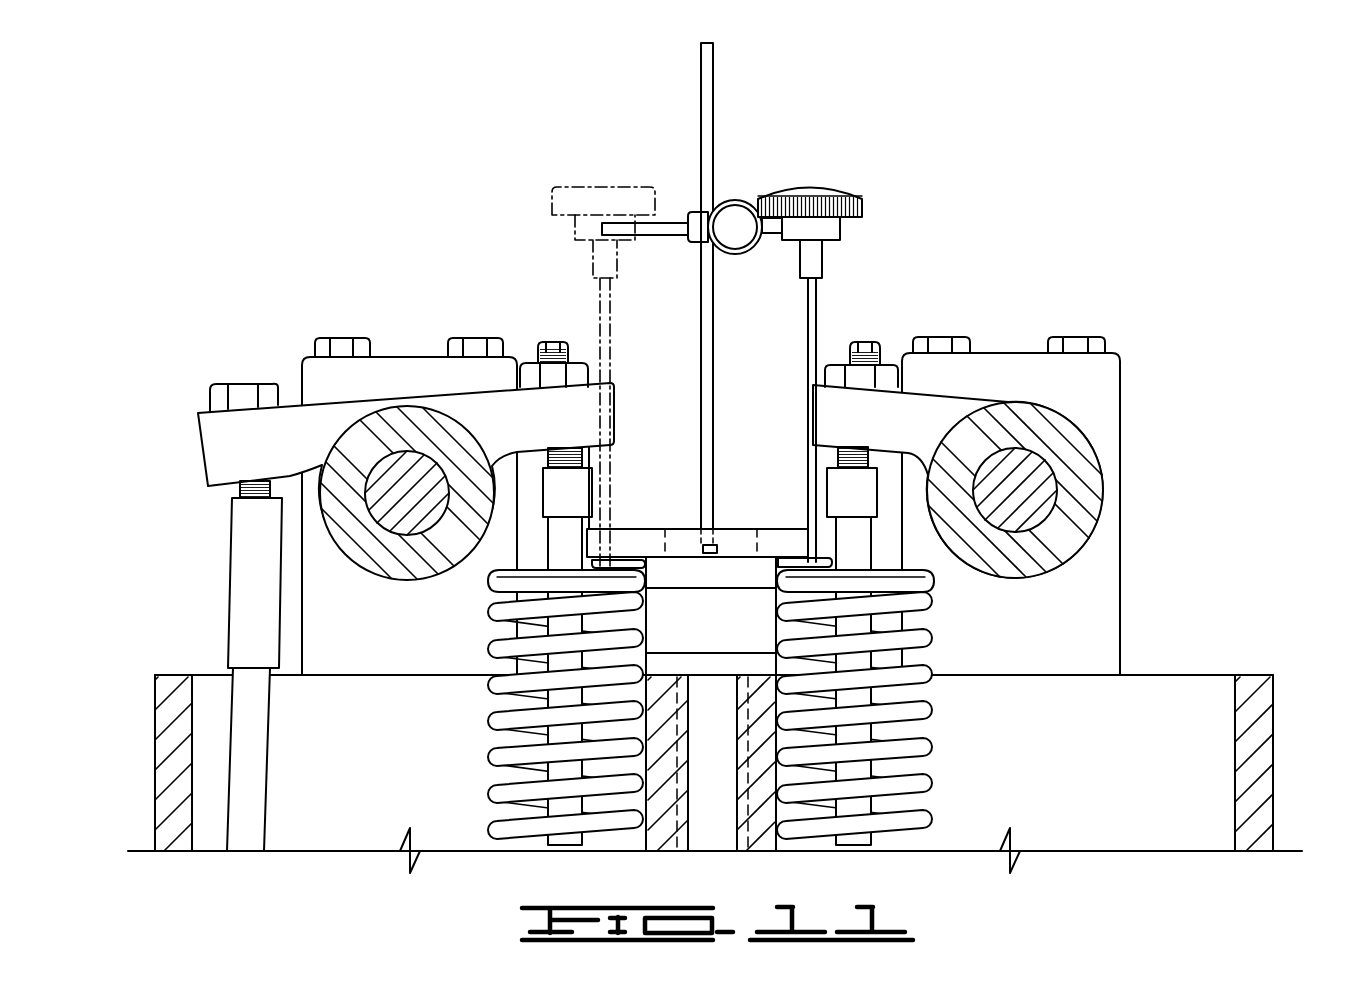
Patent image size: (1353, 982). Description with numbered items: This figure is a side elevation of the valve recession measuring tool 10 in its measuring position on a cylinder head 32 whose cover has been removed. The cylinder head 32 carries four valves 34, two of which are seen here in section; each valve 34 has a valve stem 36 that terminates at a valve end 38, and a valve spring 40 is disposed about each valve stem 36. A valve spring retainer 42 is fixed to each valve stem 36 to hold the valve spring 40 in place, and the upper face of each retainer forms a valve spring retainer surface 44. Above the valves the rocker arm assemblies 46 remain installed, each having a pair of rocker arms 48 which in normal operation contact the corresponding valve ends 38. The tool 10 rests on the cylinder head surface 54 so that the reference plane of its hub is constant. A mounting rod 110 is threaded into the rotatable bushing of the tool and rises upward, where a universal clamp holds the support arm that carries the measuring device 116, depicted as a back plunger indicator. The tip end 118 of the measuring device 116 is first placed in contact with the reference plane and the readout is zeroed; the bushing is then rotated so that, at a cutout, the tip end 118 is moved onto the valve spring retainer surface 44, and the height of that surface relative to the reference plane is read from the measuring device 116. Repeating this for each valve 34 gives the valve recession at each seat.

The valve recession measuring tool 10 is at (793, 108).
The cylinder head 32 is at (1273, 753).
The valve 34 is at (573, 530).
The valve stem 36 is at (737, 645).
The valve end 38 is at (827, 477).
The valve spring 40 is at (500, 827).
The valve spring retainer 42 is at (490, 585).
The valve spring retainer surface 44 is at (593, 567).
The rocker arm assembly 46 is at (300, 397).
The rocker arm 48 is at (487, 392).
The cylinder head surface 54 is at (343, 676).
The mounting rod 110 is at (699, 92).
The measuring device 116 is at (842, 184).
The tip end 118 is at (818, 300).